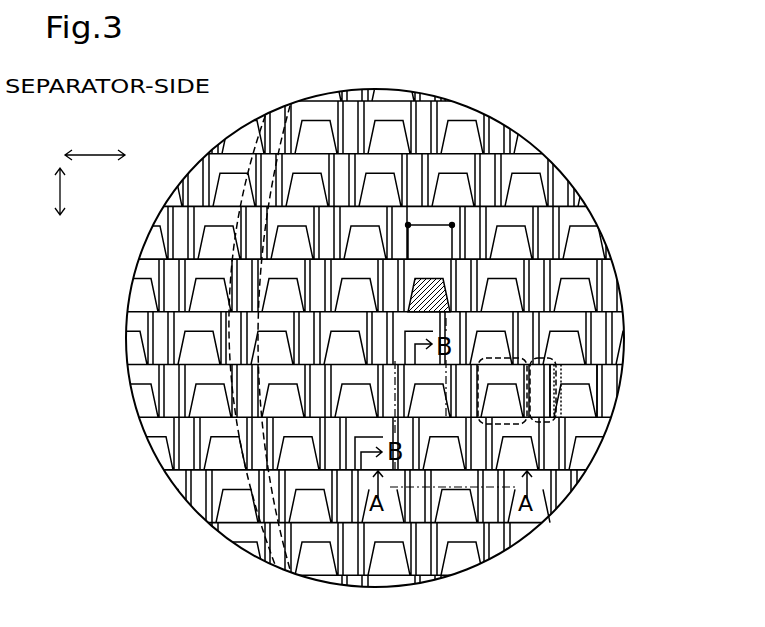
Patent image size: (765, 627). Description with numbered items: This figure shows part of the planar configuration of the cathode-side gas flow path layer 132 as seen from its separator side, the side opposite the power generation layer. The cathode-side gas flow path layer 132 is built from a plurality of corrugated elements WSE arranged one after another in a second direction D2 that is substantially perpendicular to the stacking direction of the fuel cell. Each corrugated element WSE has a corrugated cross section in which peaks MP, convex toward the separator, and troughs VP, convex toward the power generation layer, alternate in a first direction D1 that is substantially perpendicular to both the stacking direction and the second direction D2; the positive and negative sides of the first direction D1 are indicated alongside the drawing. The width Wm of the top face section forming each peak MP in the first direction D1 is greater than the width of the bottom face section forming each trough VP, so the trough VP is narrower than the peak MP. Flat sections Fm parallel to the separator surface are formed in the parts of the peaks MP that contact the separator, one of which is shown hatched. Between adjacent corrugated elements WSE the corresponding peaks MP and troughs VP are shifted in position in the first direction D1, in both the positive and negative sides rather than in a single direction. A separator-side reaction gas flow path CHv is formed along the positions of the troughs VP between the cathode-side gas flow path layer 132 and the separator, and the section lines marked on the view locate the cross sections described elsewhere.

The cathode-side gas flow path layer 132 is at (468, 120).
The flat section Fm is at (449, 291).
The peak MP is at (495, 358).
The trough VP is at (548, 358).
The corrugated element WSE is at (113, 318).
The separator-side reaction gas flow path CHv is at (268, 528).
The width of the top face section Wm is at (439, 230).
The first direction D1 is at (95, 144).
The second direction D2 is at (41, 191).